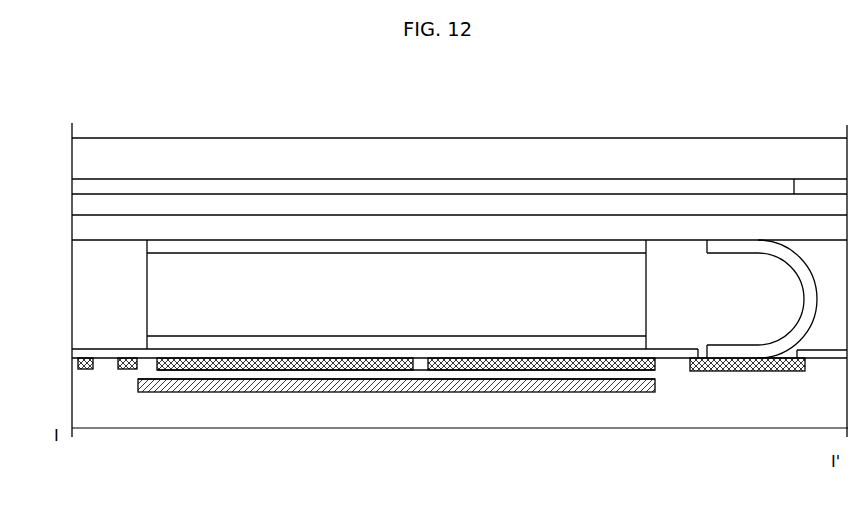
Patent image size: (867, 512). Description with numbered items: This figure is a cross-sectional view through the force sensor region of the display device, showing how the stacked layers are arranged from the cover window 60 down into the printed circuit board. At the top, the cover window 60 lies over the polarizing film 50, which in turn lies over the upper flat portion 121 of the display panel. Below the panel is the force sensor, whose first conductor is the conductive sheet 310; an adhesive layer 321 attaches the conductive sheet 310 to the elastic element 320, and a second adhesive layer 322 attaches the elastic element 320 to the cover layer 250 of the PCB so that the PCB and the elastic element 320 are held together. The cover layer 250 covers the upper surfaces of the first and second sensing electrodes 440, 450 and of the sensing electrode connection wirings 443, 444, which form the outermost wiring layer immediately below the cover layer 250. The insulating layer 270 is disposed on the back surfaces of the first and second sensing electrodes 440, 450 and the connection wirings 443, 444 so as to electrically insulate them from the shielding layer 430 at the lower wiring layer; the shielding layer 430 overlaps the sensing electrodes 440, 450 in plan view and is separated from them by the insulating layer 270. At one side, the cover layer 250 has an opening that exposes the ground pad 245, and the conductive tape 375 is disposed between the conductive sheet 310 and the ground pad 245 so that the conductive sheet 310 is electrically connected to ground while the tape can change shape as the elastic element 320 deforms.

The cover window 60 is at (88, 160).
The polarizing film 50 is at (84, 189).
The upper flat portion 121 is at (86, 207).
The conductive sheet 310 is at (88, 228).
The adhesive layer 321 is at (148, 249).
The elastic element 320 is at (163, 290).
The adhesive layer 322 is at (140, 347).
The sensing electrode connection wiring 444 is at (95, 369).
The sensing electrode connection wiring 443 is at (131, 369).
The insulating layer 270 is at (180, 379).
The cover layer 250 is at (262, 371).
The first sensing electrode 440 is at (328, 371).
The shielding layer 430 is at (378, 393).
The second sensing electrode 450 is at (468, 371).
The ground pad 245 is at (712, 372).
The conductive tape 375 is at (763, 350).